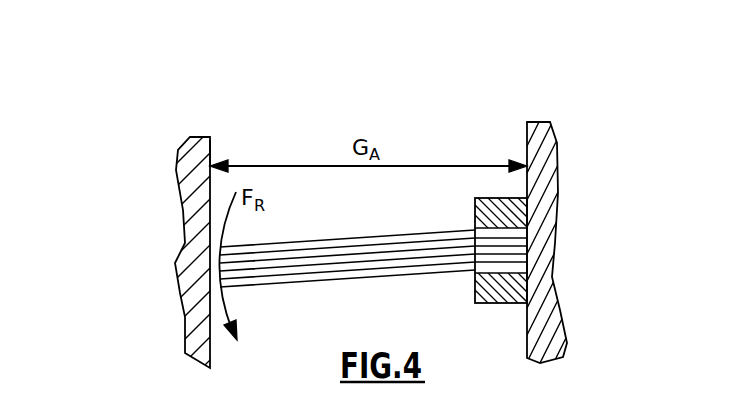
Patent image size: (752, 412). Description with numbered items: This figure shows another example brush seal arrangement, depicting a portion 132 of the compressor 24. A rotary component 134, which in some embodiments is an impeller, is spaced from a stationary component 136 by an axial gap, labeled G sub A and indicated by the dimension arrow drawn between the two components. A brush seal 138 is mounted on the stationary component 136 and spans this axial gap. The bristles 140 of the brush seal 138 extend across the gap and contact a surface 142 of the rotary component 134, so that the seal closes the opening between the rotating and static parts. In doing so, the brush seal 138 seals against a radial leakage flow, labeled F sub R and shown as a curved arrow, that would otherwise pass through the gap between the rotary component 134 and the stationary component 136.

The compressor 24 is at (178, 78).
The portion 132 is at (119, 163).
The rotary component 134 is at (190, 258).
The stationary component 136 is at (545, 254).
The brush seal 138 is at (490, 214).
The bristles 140 is at (326, 246).
The surface 142 is at (212, 150).